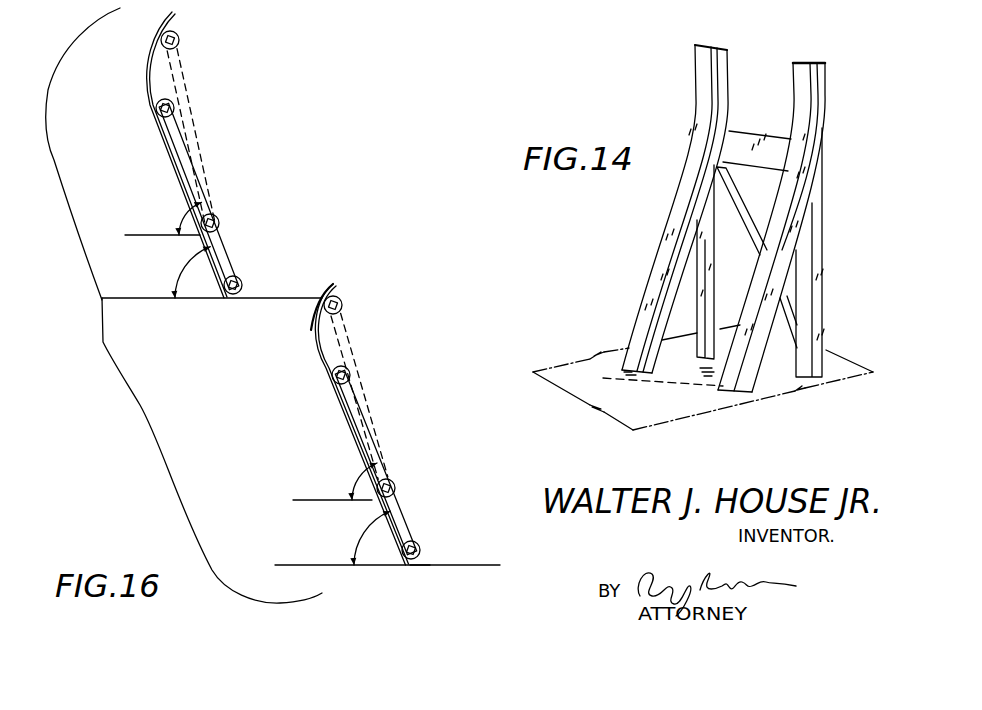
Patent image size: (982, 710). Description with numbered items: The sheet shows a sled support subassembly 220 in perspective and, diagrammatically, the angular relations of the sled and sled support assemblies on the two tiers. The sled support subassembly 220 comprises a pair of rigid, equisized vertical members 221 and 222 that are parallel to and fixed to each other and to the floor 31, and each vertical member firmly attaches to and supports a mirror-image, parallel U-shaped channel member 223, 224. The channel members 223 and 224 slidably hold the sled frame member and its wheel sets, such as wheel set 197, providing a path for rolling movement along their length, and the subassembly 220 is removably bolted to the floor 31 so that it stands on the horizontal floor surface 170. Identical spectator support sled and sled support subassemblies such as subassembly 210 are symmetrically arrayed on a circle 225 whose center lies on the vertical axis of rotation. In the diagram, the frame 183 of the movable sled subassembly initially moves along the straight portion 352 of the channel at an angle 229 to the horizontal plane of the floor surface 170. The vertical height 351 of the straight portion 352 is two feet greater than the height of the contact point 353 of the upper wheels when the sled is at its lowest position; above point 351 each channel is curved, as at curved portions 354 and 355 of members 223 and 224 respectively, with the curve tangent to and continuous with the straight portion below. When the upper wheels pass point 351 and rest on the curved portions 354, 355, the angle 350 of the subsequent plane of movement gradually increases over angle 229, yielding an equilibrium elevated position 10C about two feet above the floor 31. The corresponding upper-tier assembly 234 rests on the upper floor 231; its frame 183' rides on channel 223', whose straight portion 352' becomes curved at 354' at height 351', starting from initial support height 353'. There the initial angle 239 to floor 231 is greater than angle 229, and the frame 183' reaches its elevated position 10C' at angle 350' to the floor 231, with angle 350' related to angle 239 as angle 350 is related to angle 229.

In FIG. 16, the elevated position 10C is at (367, 396).
In FIG. 16, the elevated position 10C' is at (211, 126).
In FIG. 16, the floor 31 is at (300, 563).
In FIG. 16, the horizontal floor surface 170 is at (470, 564).
In FIG. 14, the horizontal floor surface 170 is at (658, 402).
In FIG. 16, the frame 183 is at (419, 493).
In FIG. 16, the frame 183' is at (244, 229).
In FIG. 16, the wheel set 197 is at (353, 368).
In FIG. 16, the spectator support sled and sled support subassembly 210 is at (253, 435).
In FIG. 14, the sled support subassembly 220 is at (829, 336).
In FIG. 14, the vertical member 221 is at (825, 206).
In FIG. 14, the vertical member 222 is at (697, 297).
In FIG. 16, the channel member 223 is at (358, 464).
In FIG. 14, the channel member 223 is at (790, 227).
In FIG. 16, the channel member 223' is at (190, 198).
In FIG. 14, the channel member 224 is at (686, 118).
In FIG. 14, the circle 225 is at (590, 379).
In FIG. 16, the angle 229 is at (357, 533).
In FIG. 16, the upper floor 231 is at (263, 296).
In FIG. 16, the assembly 234 is at (240, 206).
In FIG. 16, the angle 239 is at (181, 279).
In FIG. 16, the angle 350 is at (335, 481).
In FIG. 16, the angle 350' is at (162, 218).
In FIG. 16, the vertical height 351 is at (331, 425).
In FIG. 16, the height 351' is at (154, 155).
In FIG. 16, the straight portion 352 is at (352, 462).
In FIG. 14, the straight portion 352 is at (799, 227).
In FIG. 16, the straight portion 352' is at (173, 196).
In FIG. 16, the contact point 353 is at (316, 379).
In FIG. 16, the initial height of point of radial support 353' is at (132, 114).
In FIG. 16, the curved portion 354 is at (336, 424).
In FIG. 14, the curved portion 354 is at (823, 156).
In FIG. 16, the curved portion 354' is at (152, 155).
In FIG. 14, the curved portion 355 is at (694, 62).